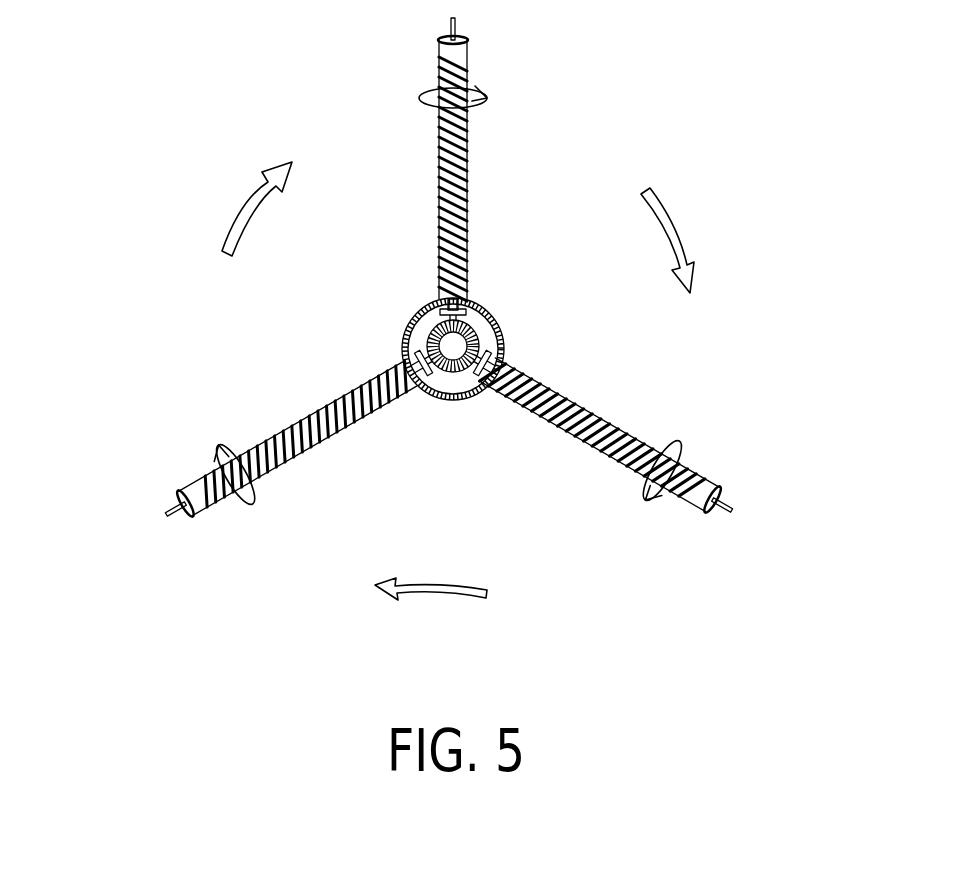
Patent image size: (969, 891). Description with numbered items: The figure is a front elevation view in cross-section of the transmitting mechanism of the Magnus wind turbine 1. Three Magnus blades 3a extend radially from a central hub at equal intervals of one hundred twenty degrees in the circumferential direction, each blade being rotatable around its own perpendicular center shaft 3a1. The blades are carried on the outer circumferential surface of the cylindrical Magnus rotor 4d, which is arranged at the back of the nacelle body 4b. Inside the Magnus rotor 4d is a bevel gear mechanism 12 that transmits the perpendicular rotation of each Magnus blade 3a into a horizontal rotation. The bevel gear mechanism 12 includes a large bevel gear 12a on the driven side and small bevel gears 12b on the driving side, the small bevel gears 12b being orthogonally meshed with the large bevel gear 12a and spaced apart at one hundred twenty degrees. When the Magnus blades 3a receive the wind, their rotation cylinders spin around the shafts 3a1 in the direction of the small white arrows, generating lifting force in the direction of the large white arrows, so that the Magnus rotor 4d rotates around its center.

The rotary body assembly 1 is at (193, 211).
The Magnus blade 3a is at (440, 152).
The perpendicular center shaft 3a1 is at (445, 28).
The body 4b is at (389, 337).
The Magnus rotor 4d is at (422, 308).
The bevel gear mechanism 12 is at (459, 398).
The large bevel gear 12a is at (475, 330).
The small bevel gear 12b is at (478, 316).